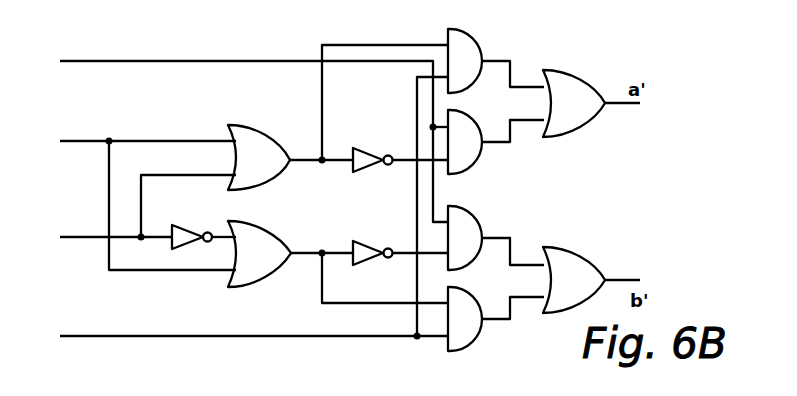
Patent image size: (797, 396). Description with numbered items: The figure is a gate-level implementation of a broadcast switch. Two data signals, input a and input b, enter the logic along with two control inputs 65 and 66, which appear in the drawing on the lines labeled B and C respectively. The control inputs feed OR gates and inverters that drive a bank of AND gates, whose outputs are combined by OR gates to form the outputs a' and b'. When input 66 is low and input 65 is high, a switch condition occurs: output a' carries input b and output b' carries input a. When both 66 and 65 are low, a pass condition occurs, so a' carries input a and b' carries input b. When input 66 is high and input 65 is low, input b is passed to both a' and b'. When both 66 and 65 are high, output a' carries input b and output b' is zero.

The input 65 is at (144, 184).
The input 66 is at (144, 237).
The input a is at (252, 130).
The input B is at (97, 107).
The input C is at (144, 212).
The input b is at (252, 208).